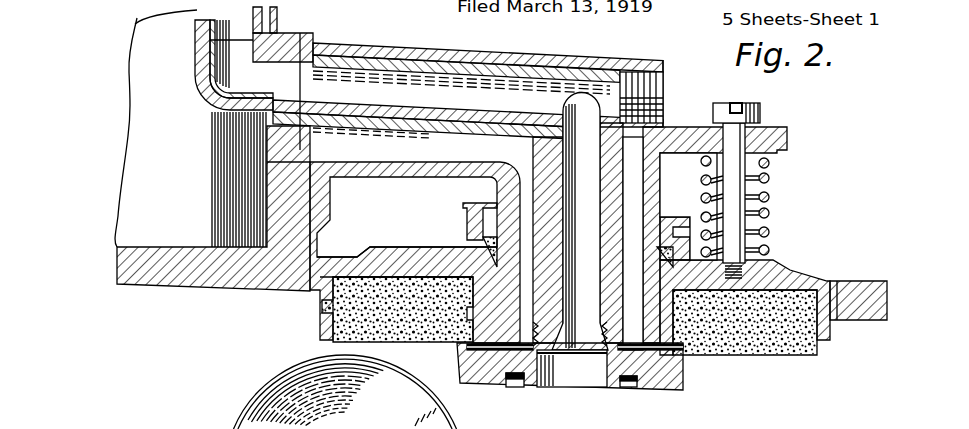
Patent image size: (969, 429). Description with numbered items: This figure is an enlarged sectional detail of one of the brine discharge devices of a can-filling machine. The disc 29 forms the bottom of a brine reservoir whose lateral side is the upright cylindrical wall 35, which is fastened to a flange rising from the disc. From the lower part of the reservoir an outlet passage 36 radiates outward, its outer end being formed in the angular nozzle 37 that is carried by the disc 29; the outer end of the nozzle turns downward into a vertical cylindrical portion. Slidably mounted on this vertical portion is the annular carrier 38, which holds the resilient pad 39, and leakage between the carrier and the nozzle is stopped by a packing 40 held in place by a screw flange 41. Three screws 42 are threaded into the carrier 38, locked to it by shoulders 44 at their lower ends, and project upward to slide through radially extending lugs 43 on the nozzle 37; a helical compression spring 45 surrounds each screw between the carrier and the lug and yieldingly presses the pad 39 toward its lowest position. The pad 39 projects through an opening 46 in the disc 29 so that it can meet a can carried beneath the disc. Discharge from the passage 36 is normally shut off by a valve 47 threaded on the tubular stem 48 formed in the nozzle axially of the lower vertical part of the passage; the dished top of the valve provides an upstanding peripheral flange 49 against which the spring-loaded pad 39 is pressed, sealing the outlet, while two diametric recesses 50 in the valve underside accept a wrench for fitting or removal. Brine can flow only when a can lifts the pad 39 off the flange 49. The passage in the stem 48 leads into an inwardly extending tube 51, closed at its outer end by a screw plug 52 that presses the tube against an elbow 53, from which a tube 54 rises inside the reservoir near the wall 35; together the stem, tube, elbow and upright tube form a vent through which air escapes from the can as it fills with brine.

The disc 29 is at (191, 290).
The cylindrical wall 35 is at (279, 22).
The outlet passage 36 is at (268, 150).
The nozzle 37 is at (391, 210).
The annular carrier 38 is at (384, 247).
The resilient pad 39 is at (331, 323).
The packing 40 is at (482, 250).
The screw flange 41 is at (487, 200).
The screw 42 is at (712, 108).
The lug 43 is at (772, 163).
The shoulder 44 is at (750, 267).
The helical compression spring 45 is at (768, 198).
The opening 46 is at (834, 283).
The valve 47 is at (497, 383).
The tubular stem 48 is at (548, 358).
The peripheral flange 49 is at (683, 357).
The diametric recess 50 is at (511, 388).
The tube 51 is at (558, 51).
The screw plug 52 is at (667, 80).
The elbow 53 is at (213, 100).
The tube 54 is at (190, 14).